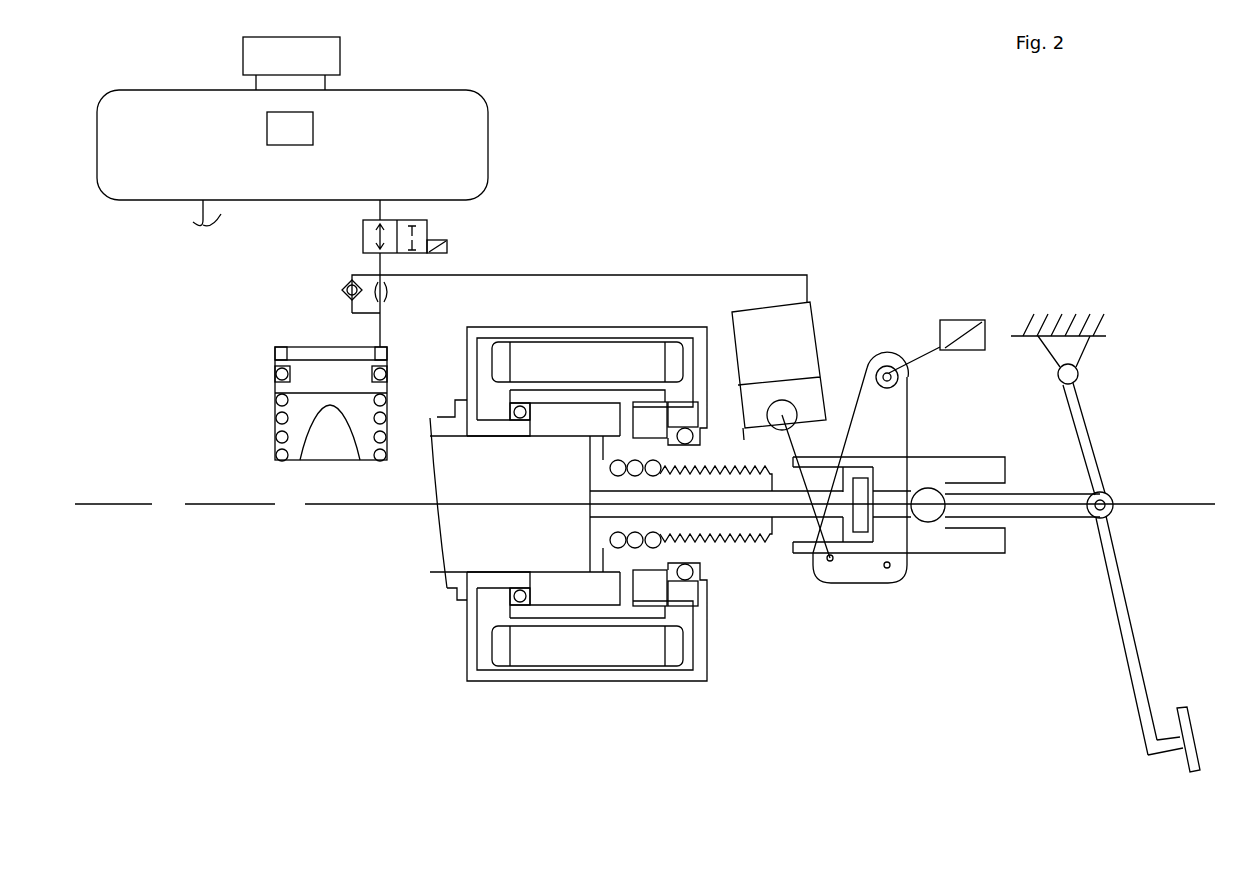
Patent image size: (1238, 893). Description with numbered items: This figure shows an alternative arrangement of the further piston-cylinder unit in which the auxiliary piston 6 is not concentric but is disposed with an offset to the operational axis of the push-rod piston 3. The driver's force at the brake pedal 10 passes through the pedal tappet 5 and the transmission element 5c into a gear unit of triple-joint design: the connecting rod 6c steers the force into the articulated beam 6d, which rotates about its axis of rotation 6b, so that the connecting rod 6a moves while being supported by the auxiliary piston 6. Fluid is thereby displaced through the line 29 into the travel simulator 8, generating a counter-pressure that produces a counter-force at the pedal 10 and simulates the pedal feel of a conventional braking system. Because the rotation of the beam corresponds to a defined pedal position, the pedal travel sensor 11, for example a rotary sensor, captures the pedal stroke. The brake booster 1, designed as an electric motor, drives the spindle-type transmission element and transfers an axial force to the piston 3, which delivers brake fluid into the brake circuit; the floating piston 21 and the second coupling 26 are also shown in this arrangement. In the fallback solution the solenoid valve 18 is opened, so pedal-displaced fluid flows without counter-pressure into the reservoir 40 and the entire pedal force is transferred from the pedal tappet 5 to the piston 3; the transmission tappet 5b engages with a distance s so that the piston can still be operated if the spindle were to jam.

The reservoir 40 is at (418, 152).
The pressure regulation solenoid valve 18 is at (405, 243).
The line to travel simulator 29 is at (663, 273).
The travel simulator 8 is at (315, 390).
The brake booster 1 is at (577, 362).
The floating piston 21 is at (477, 532).
The transmission tappet 5b is at (694, 513).
The push-rod piston 3 is at (650, 523).
The auxiliary piston 6 is at (753, 397).
The first connecting rod 6a is at (795, 455).
The axis of rotation of articulated beam 6b is at (889, 368).
The second connecting rod 6c is at (910, 557).
The articulated beam 6d is at (845, 570).
The pedal travel sensor 11 is at (960, 320).
The transmission element 5c is at (945, 472).
The second coupling 26 is at (860, 525).
The pedal tappet 5 is at (1025, 515).
The brake pedal 10 is at (1113, 557).